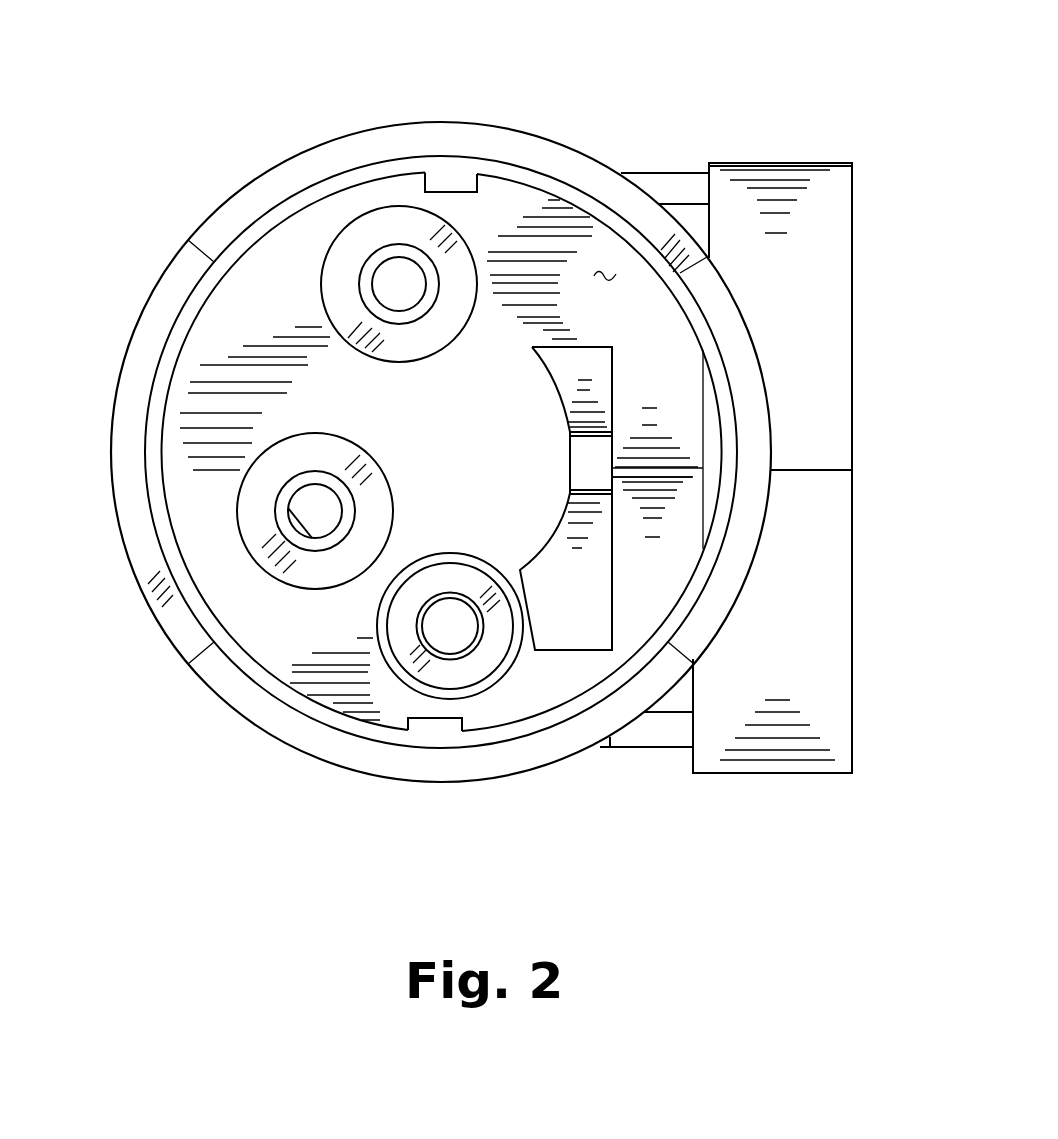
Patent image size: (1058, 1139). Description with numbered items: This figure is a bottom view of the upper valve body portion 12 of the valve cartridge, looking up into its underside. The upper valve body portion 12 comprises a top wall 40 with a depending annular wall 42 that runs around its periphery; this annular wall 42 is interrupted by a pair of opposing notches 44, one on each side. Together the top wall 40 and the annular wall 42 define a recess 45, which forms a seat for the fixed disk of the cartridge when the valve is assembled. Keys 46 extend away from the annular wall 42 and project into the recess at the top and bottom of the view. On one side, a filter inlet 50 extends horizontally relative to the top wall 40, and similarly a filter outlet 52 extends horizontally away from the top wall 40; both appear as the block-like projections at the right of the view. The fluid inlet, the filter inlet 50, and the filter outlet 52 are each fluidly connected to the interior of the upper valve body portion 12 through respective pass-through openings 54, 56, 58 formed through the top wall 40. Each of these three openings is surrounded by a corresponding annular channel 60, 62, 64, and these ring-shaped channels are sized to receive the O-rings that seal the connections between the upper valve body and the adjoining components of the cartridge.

The upper valve body portion 12 is at (490, 36).
The top wall 40 is at (267, 282).
The annular wall 42 is at (592, 156).
The notches 44 is at (755, 402).
The recess 45 is at (607, 270).
The keys 46 is at (440, 198).
The filter inlet 50 is at (855, 590).
The filter outlet 52 is at (853, 193).
The pass-through opening 54 is at (305, 477).
The pass-through opening 56 is at (458, 598).
The pass-through opening 58 is at (422, 318).
The annular channel 60 is at (334, 458).
The annular channel 62 is at (434, 580).
The annular channel 64 is at (458, 312).